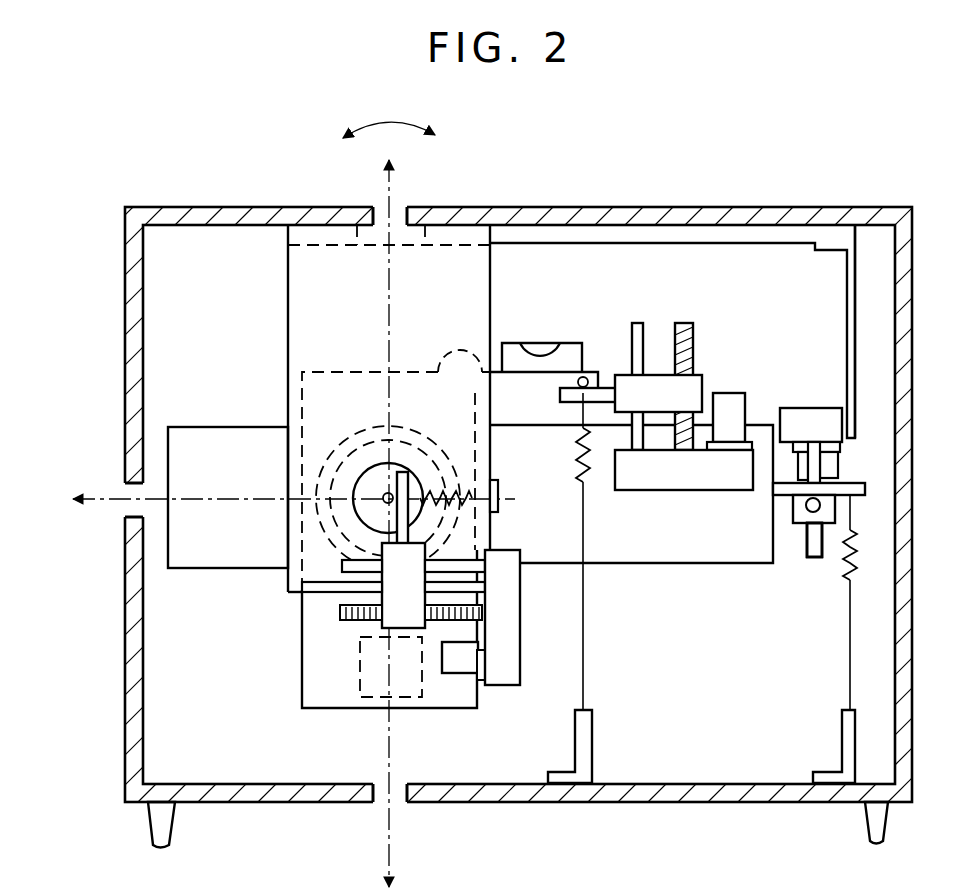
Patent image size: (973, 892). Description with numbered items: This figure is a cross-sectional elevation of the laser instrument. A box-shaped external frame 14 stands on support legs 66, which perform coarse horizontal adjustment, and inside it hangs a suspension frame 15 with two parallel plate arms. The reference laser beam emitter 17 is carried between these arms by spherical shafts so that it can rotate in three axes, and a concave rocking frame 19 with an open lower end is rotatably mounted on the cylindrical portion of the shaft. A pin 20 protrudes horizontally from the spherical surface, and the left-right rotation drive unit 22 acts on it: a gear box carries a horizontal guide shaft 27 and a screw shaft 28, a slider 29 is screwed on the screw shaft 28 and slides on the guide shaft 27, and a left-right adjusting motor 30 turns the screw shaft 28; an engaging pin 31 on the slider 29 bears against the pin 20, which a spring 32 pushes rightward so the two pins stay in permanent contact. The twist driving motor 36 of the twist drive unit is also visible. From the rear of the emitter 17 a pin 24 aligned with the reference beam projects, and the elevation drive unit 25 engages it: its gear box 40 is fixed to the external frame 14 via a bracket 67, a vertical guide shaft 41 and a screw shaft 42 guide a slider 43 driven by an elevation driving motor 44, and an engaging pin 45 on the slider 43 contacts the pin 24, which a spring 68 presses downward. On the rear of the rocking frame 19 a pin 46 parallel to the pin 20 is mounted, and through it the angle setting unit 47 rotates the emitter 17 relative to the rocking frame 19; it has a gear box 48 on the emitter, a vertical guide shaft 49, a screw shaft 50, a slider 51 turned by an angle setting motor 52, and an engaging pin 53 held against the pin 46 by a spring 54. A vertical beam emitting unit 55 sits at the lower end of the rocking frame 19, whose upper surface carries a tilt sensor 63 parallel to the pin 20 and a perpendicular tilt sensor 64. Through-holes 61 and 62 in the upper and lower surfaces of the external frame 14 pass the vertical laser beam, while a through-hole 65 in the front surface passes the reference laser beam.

The external frame 14 is at (900, 730).
The suspension frame 15 is at (300, 336).
The reference laser beam emitter 17 is at (622, 564).
The rocking frame 19 is at (330, 372).
The pin 20 is at (383, 493).
The left-right rotation drive unit 22 is at (531, 664).
The pin 24 is at (822, 507).
The elevation drive unit 25 is at (850, 458).
The guide shaft 27 is at (345, 566).
The screw shaft 28 is at (340, 608).
The slider 29 is at (413, 582).
The left-right adjusting motor 30 is at (457, 656).
The engaging pin 31 is at (403, 474).
The spring 32 is at (465, 512).
The twist driving motor 36 is at (500, 672).
The gear box 40 is at (808, 420).
The guide shaft 41 is at (809, 558).
The screw shaft 42 is at (814, 540).
The slider 43 is at (802, 522).
The elevation driving motor 44 is at (866, 490).
The engaging pin 45 is at (840, 512).
The pin 46 is at (584, 380).
The angle setting unit 47 is at (664, 312).
The gear box 48 is at (700, 478).
The guide shaft 49 is at (637, 322).
The screw shaft 50 is at (685, 322).
The slider 51 is at (692, 392).
The angle setting motor 52 is at (738, 400).
The engaging pin 53 is at (552, 410).
The spring 54 is at (590, 463).
The vertical beam emitting unit 55 is at (368, 712).
The through-hole 61 is at (387, 215).
The through-hole 62 is at (382, 795).
The tilt sensor 63 is at (458, 350).
The tilt sensor 64 is at (570, 358).
The through-hole 65 is at (133, 490).
The support legs 66 is at (880, 825).
The bracket 67 is at (852, 381).
The spring 68 is at (855, 560).